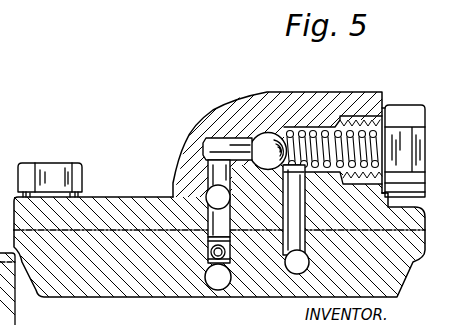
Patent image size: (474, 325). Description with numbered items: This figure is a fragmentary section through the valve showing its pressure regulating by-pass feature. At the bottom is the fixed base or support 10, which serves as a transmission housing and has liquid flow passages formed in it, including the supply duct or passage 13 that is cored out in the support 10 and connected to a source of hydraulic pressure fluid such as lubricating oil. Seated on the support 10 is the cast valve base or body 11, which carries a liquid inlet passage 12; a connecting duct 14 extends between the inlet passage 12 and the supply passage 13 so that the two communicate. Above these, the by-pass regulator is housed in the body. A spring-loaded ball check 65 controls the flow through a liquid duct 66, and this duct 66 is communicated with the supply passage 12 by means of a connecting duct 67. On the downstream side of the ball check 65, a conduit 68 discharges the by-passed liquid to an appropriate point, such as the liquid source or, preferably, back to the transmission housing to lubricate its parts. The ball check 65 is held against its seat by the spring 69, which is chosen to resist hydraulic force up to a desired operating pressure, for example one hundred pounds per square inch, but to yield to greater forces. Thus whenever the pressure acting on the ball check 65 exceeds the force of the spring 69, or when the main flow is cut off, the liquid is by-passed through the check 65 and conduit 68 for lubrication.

The fixed base or support 10 is at (123, 292).
The valve base or body 11 is at (125, 203).
The liquid inlet passage 12 is at (230, 205).
The supply duct or passage 13 is at (203, 286).
The connecting duct 14 is at (204, 239).
The spring-loaded ball check 65 is at (257, 135).
The liquid duct 66 is at (221, 139).
The connecting duct 67 is at (186, 178).
The conduit 68 is at (306, 245).
The spring 69 is at (313, 130).